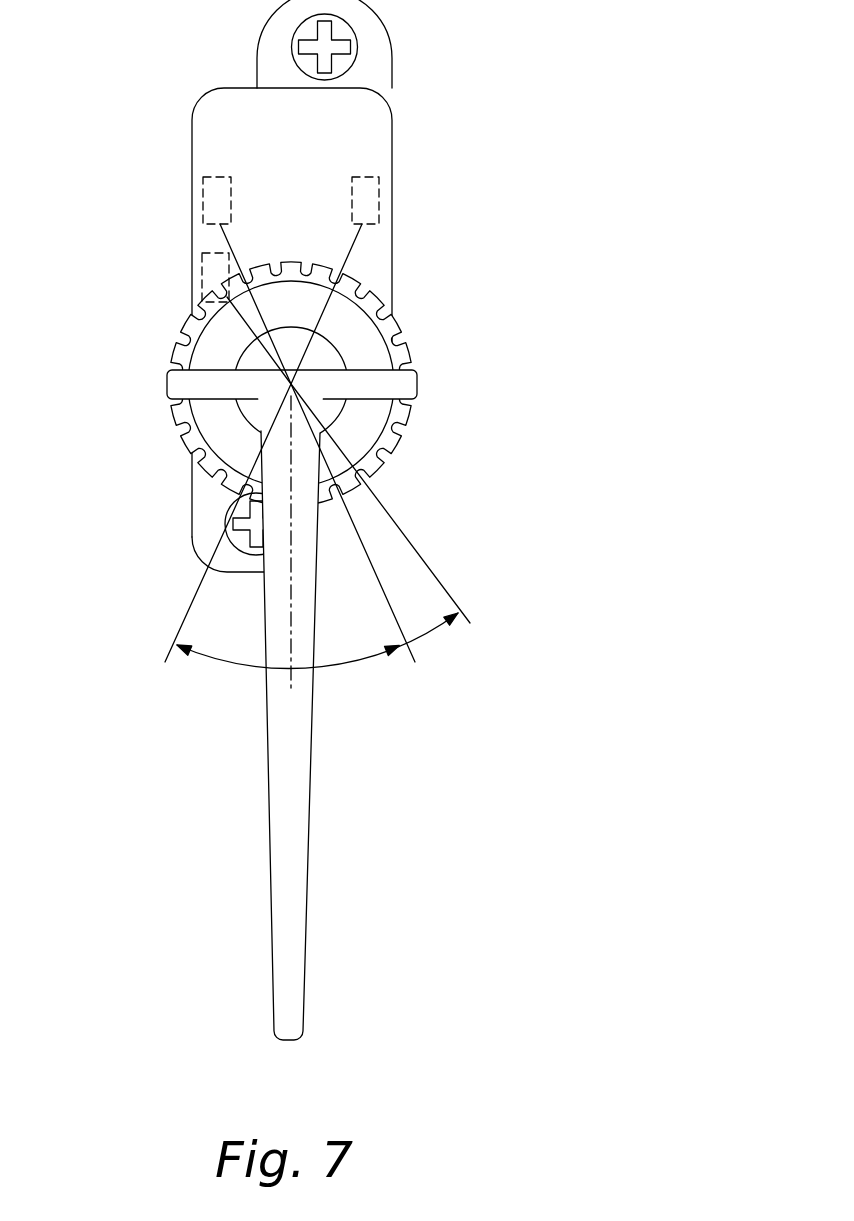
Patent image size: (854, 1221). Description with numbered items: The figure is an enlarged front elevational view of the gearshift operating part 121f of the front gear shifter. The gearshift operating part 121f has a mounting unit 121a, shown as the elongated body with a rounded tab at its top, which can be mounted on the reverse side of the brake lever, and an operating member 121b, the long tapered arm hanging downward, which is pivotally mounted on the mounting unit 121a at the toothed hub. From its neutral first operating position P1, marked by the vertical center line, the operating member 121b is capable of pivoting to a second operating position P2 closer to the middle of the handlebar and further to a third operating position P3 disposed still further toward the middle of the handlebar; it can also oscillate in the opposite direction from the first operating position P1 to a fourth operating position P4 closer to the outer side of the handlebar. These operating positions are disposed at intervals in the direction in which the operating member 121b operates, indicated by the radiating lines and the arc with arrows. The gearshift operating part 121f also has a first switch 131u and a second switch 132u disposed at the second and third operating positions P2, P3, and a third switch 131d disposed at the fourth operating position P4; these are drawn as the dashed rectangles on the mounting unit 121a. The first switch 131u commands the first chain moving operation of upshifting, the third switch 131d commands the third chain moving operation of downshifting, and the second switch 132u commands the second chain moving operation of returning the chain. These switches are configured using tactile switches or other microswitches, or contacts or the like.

The mounting unit 121a is at (393, 150).
The operating member 121b is at (303, 827).
The gearshift operating part 121f is at (421, 270).
The first switch 131u is at (203, 203).
The third switch 131d is at (380, 197).
The second switch 132u is at (202, 285).
The first operating position P1 is at (289, 569).
The second operating position P2 is at (369, 546).
The third operating position P3 is at (345, 527).
The fourth operating position P4 is at (211, 546).